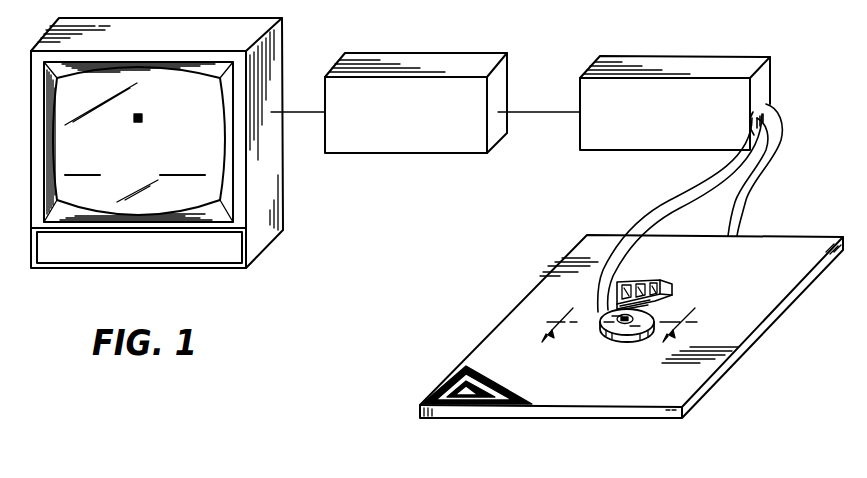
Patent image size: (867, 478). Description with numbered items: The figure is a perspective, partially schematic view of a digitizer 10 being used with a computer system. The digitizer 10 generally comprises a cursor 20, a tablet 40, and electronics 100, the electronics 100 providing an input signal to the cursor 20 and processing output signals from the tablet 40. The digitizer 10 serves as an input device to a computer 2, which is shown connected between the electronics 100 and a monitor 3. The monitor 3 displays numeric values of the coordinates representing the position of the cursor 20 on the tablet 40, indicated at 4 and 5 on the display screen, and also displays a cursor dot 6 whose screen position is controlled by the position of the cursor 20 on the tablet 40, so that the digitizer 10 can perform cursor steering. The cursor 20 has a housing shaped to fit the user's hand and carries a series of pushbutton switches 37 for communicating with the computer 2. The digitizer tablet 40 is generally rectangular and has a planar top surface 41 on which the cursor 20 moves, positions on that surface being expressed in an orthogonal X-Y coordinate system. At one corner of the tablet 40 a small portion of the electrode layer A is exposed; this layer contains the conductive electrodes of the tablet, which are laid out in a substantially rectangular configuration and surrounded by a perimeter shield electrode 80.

The computer 2 is at (472, 58).
The monitor 3 is at (277, 47).
The X coordinate display value 4 is at (105, 169).
The Y coordinate display value 5 is at (191, 165).
The cursor dot 6 is at (145, 116).
The digitizer 10 is at (546, 166).
The cursor 20 is at (660, 321).
The pushbutton switches 37 is at (653, 284).
The digitizer tablet 40 is at (730, 369).
The planar top surface 41 is at (737, 295).
The perimeter shield electrode 80 is at (478, 403).
The electronics 100 is at (698, 62).
The electrode layer A is at (460, 384).